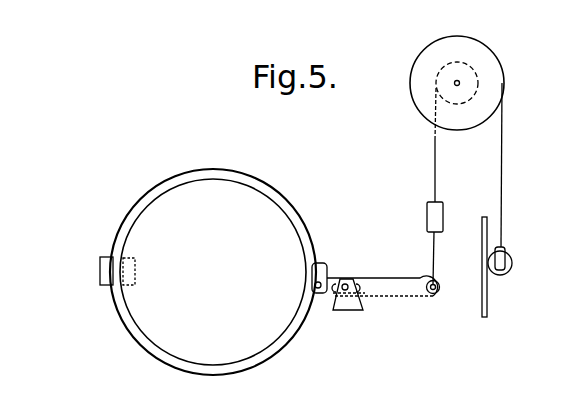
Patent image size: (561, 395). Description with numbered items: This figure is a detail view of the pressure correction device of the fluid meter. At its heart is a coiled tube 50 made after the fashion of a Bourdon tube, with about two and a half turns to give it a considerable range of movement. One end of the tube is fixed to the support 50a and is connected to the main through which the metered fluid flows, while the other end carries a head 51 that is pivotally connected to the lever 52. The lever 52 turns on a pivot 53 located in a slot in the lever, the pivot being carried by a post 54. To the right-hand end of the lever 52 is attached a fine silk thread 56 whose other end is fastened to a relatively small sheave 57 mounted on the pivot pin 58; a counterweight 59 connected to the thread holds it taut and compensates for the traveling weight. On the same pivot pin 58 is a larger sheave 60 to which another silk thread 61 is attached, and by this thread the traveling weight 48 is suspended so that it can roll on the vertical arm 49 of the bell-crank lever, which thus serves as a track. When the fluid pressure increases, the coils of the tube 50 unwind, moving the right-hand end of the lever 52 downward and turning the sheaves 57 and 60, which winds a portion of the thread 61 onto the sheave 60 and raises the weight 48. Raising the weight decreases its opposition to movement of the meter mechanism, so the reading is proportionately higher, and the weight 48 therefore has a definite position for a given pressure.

The suspended weight 48 is at (505, 273).
The arm of the bell-crank lever 49 is at (482, 311).
The coiled tube 50 is at (213, 259).
The support 50a is at (100, 275).
The head 51 is at (312, 275).
The lever 52 is at (387, 278).
The pivot 53 is at (351, 281).
The post 54 is at (362, 308).
The silk thread 56 is at (434, 160).
The small sheave 57 is at (478, 70).
The pivot pin 58 is at (460, 83).
The counterweight 59 is at (436, 216).
The larger sheave 60 is at (424, 62).
The silk thread 61 is at (503, 175).